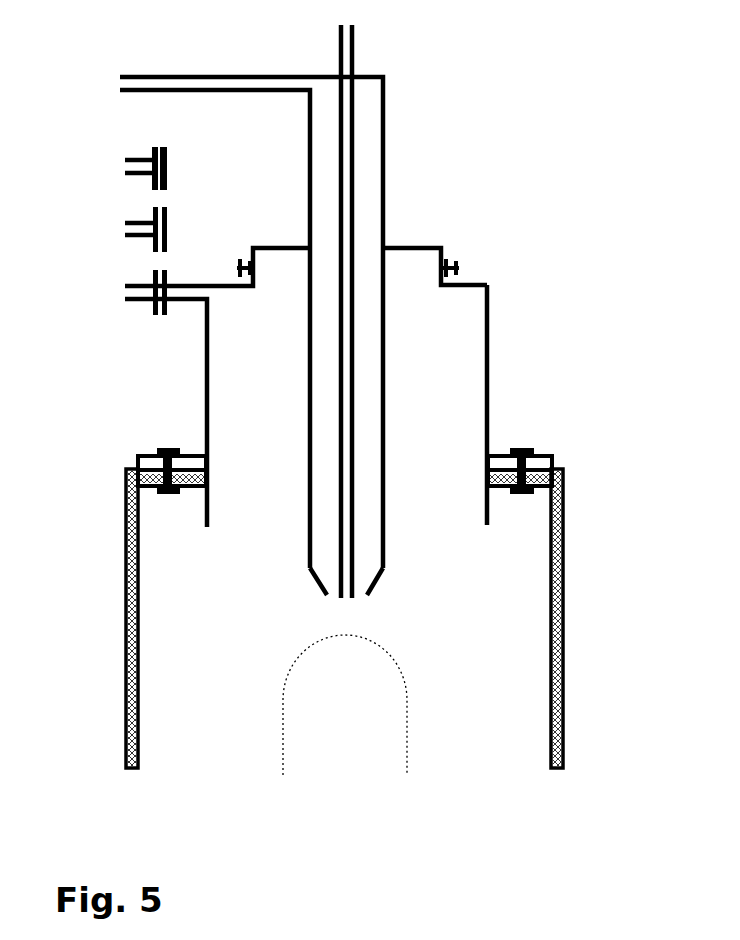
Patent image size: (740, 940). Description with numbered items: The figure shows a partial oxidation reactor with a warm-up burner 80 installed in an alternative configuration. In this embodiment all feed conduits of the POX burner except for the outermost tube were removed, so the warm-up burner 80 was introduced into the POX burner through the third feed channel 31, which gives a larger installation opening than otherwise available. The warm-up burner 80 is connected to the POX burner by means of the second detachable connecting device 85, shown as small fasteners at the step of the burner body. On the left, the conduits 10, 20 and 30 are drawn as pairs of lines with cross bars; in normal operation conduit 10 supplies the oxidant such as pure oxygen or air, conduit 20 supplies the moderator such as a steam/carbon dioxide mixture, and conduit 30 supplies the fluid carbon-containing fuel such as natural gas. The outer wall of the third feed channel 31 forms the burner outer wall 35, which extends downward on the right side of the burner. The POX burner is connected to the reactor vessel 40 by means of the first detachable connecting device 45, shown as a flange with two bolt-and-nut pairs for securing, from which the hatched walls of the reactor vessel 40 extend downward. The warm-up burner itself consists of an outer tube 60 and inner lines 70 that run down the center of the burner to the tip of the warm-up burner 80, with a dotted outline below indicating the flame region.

The conduit 10 is at (119, 168).
The conduit 20 is at (119, 229).
The conduit 30 is at (191, 387).
The third feed channel 31 is at (476, 337).
The burner outer wall 35 is at (490, 374).
The reactor vessel 40 is at (125, 634).
The first detachable connecting device 45 is at (137, 462).
The outer tube 60 is at (226, 317).
The inner tube / electrode 70 is at (356, 33).
The warm-up burner 80 is at (305, 556).
The second detachable connecting device 85 is at (236, 266).